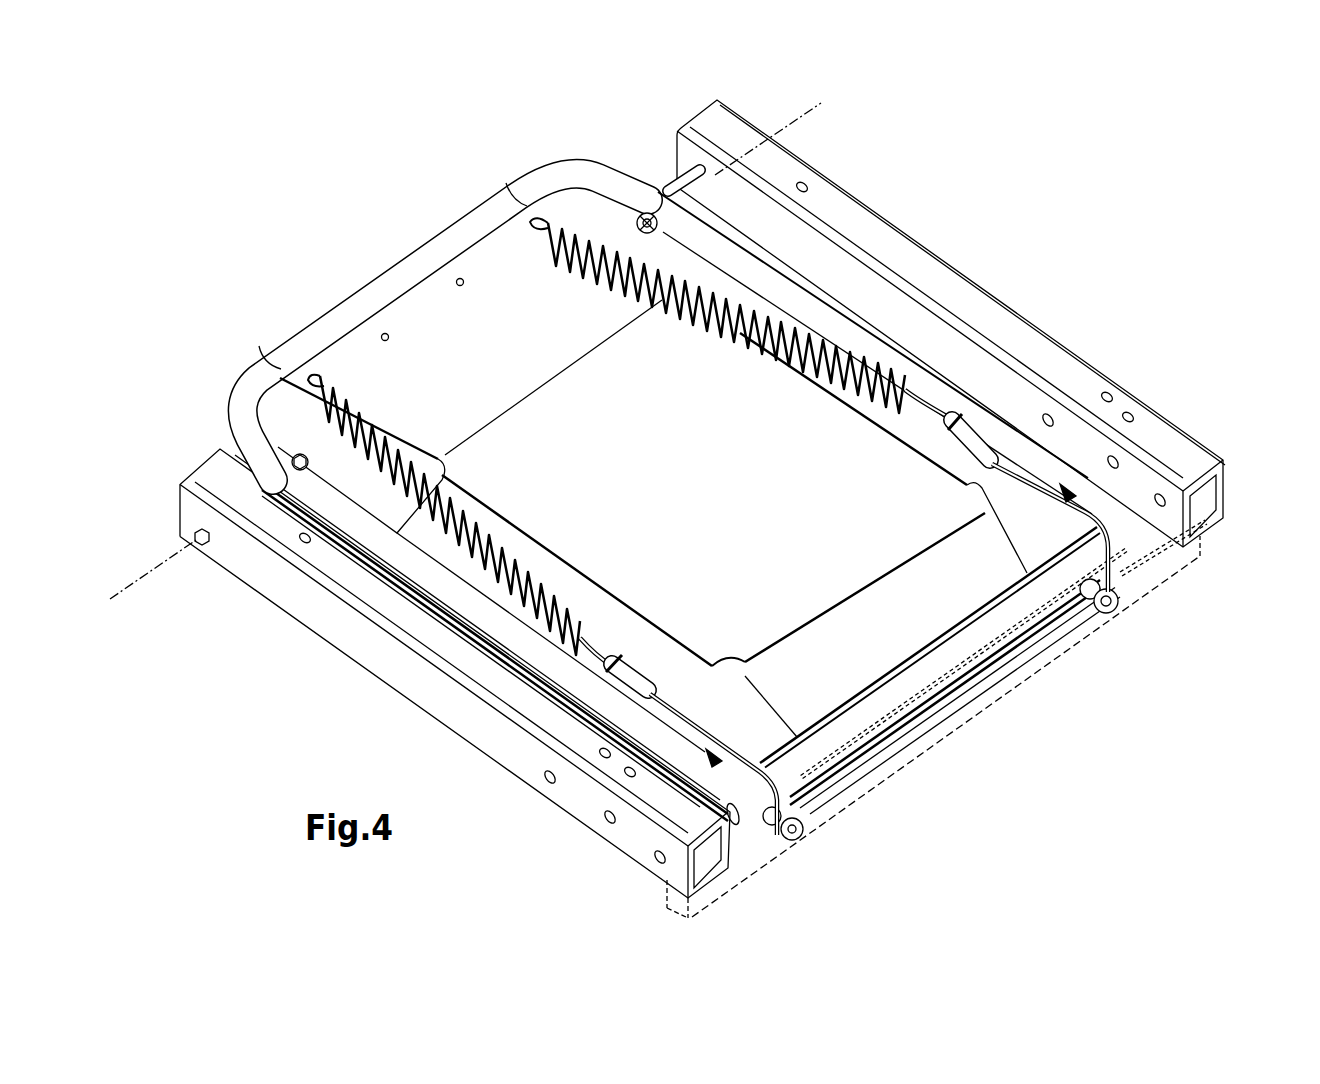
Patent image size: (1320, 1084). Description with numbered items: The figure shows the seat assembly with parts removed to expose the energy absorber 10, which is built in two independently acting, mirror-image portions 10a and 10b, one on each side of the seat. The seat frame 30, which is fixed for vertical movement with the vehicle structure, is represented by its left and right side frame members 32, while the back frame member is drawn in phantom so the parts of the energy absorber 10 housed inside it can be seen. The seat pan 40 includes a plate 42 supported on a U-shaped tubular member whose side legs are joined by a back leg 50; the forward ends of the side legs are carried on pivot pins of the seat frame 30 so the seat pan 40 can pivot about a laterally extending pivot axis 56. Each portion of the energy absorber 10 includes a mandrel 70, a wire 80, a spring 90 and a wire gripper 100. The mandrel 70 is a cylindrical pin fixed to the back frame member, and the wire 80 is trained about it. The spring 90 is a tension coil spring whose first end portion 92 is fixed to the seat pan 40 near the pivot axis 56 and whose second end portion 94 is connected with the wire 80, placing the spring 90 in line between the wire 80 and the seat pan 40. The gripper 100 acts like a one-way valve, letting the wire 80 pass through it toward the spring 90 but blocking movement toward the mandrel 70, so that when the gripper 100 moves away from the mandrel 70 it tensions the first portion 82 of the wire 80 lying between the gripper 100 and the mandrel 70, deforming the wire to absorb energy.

The energy absorber 10 is at (1085, 706).
The first portion of the energy absorber 10a is at (537, 272).
The second portion of the energy absorber 10b is at (402, 425).
The seat frame 30 is at (877, 196).
The side frame members 32 is at (320, 608).
The seat pan 40 is at (433, 230).
The plate 42 is at (706, 499).
The back leg 50 is at (1140, 540).
The pivot axis 56 is at (784, 128).
The mandrel 70 is at (1118, 604).
The wire 80 is at (1075, 500).
The first portion of the wire 82 is at (1040, 482).
The spring 90 is at (745, 296).
The first end portion of the spring 92 is at (543, 210).
The second end portion of the spring 94 is at (925, 390).
The wire gripper 100 is at (980, 428).